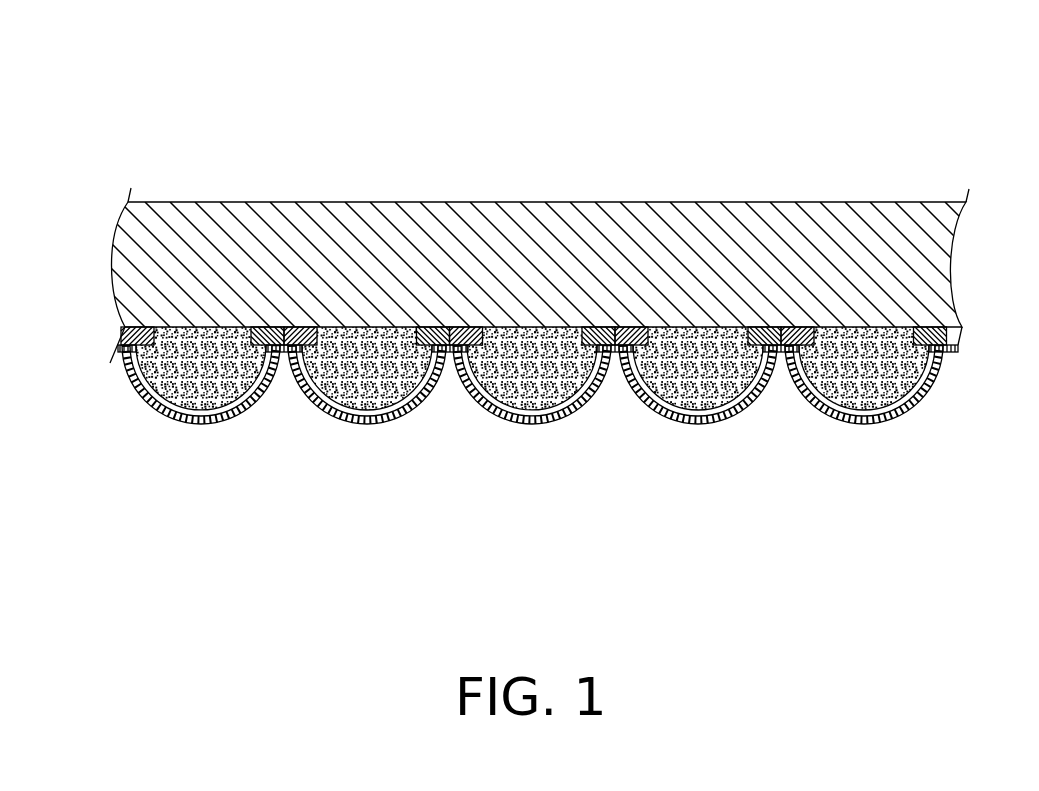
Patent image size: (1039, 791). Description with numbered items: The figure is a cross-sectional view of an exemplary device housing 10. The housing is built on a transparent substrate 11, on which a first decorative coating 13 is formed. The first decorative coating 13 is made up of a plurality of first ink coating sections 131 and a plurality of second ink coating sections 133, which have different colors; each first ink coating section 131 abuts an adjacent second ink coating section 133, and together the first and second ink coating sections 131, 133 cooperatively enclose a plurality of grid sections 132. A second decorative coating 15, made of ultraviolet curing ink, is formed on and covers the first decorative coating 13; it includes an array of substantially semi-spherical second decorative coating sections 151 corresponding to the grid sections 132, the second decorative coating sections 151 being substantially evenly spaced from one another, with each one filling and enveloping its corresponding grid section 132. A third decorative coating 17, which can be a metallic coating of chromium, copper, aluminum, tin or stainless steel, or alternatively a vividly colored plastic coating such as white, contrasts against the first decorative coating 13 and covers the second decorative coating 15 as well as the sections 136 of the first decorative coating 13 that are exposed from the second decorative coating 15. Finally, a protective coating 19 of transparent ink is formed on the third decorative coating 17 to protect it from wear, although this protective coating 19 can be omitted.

The device housing 10 is at (288, 104).
The transparent substrate 11 is at (933, 258).
The grid sections 132 is at (577, 148).
The second ink coating sections 133 is at (463, 343).
The first ink coating sections 131 is at (583, 330).
The first decorative coating 13 is at (262, 352).
The sections of the first decorative coating exposed from the second decorative coat 136 is at (612, 357).
The second decorative coating sections 151 is at (388, 385).
The second decorative coating 15 is at (830, 392).
The third decorative coating 17 is at (920, 377).
The protective coating 19 is at (897, 414).